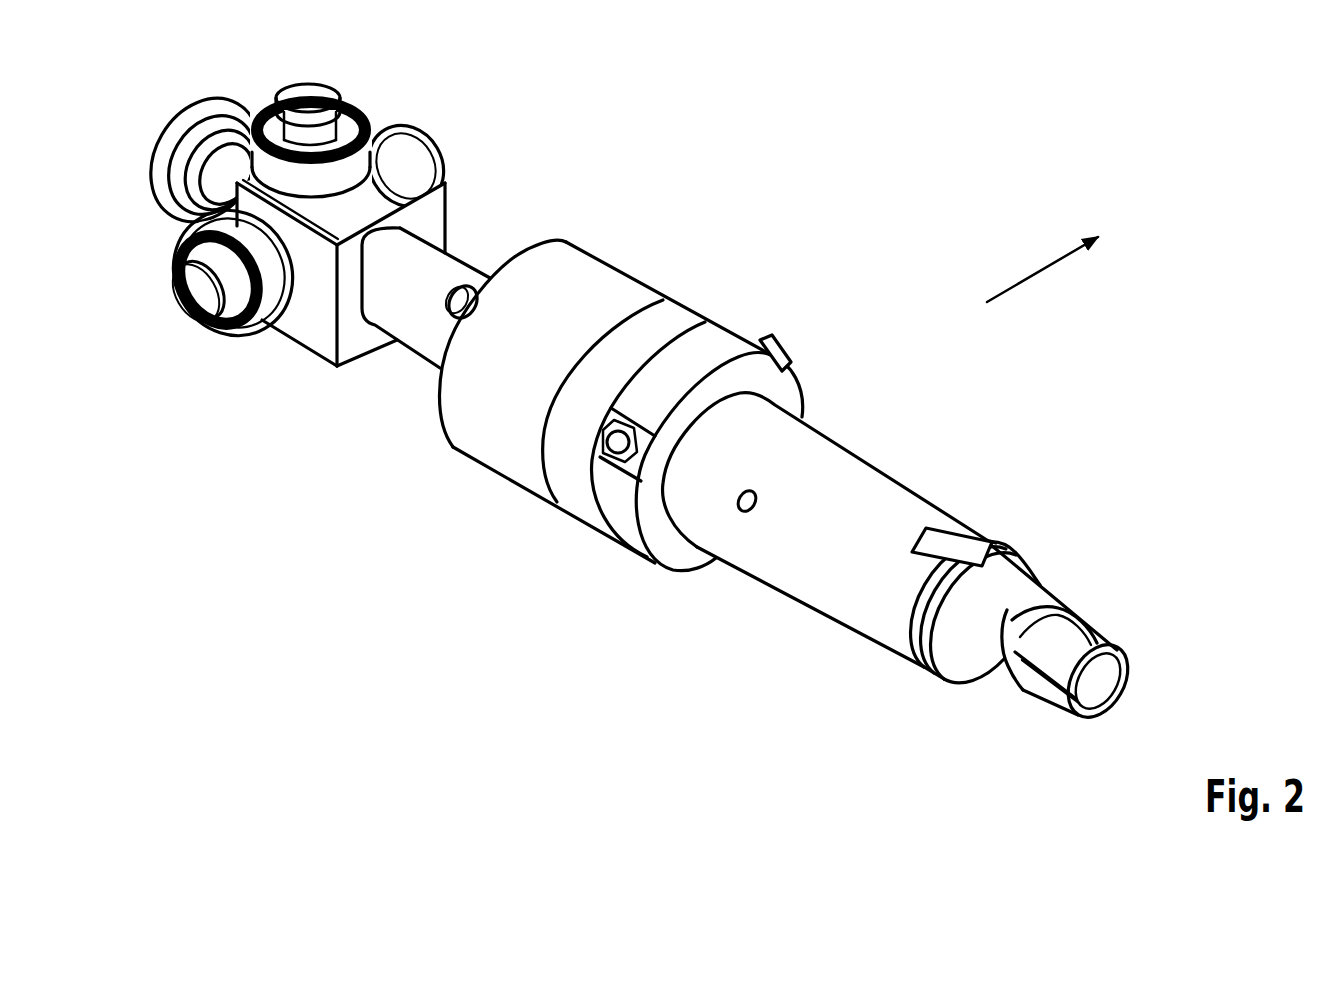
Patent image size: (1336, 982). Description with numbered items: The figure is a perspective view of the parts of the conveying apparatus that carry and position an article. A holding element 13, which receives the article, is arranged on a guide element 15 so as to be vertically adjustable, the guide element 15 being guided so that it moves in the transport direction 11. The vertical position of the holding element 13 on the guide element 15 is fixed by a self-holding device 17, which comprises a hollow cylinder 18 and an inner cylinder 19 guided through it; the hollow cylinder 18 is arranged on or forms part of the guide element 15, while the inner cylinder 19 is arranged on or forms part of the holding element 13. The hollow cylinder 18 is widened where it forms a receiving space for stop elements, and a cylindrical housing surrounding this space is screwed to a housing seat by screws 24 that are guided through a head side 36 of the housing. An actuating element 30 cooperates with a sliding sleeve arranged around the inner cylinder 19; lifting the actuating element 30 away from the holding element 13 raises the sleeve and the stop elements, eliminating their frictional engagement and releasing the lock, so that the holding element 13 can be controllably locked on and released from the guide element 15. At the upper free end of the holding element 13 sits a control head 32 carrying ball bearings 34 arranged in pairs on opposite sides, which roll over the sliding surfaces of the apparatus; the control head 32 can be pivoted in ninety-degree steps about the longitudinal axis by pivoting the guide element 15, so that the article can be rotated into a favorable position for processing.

The transport direction 11 is at (1040, 273).
The holding element 13 is at (1003, 721).
The guide element 15 is at (856, 299).
The self-holding device 17 is at (724, 250).
The hollow cylinder 18 is at (893, 470).
The inner cylinder 19 is at (1097, 638).
The screws 24 is at (437, 287).
The actuating element 30 is at (200, 177).
The control head 32 is at (153, 327).
The ball bearings 34 is at (193, 127).
The head side 36 is at (437, 407).